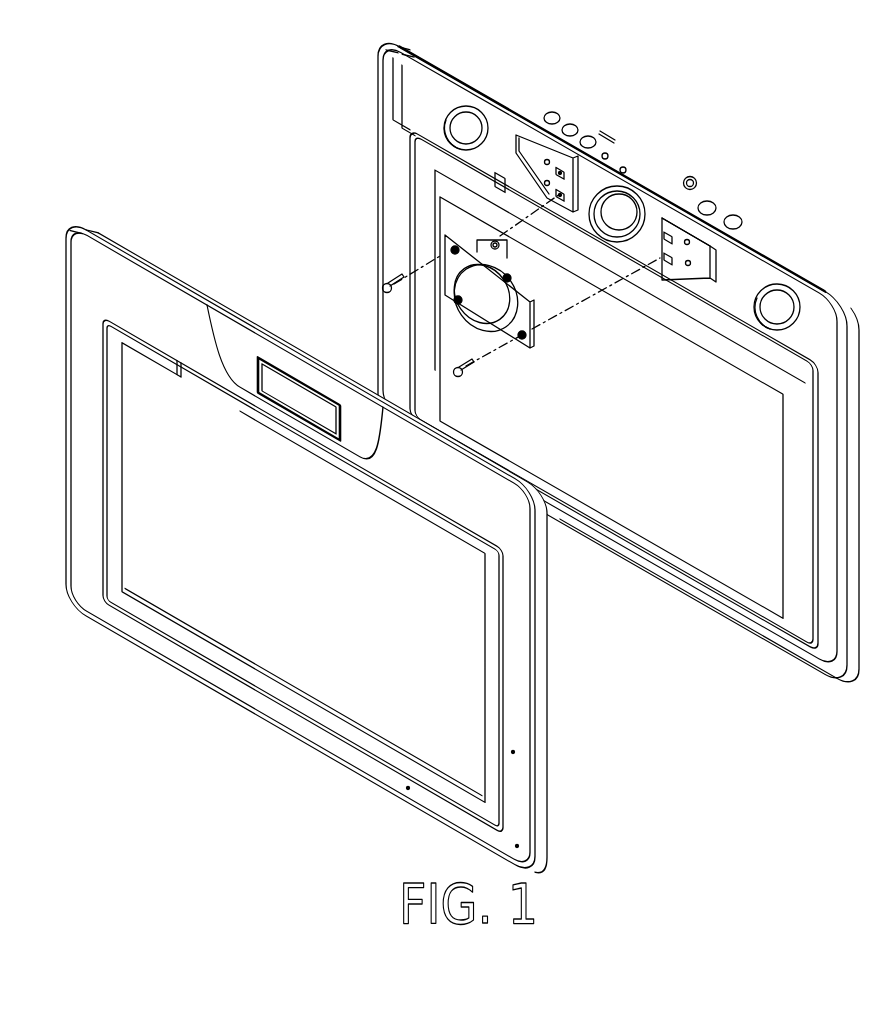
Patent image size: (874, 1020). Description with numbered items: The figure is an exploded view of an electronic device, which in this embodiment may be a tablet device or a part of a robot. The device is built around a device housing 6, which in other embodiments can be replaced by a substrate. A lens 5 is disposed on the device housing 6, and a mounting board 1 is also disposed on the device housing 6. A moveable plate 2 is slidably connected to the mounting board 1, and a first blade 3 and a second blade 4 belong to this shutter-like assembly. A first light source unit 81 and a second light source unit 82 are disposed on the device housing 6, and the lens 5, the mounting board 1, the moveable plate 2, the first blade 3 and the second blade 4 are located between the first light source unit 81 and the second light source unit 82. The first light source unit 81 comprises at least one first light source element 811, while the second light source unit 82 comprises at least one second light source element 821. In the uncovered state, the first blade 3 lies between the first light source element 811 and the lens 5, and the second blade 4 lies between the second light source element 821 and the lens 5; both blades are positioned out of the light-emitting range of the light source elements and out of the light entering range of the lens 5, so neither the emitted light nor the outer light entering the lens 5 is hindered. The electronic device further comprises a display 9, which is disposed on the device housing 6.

The mounting board 1 is at (517, 314).
The moveable plate 2 is at (533, 310).
The first blade 3 is at (512, 341).
The second blade 4 is at (440, 242).
The lens 5 is at (615, 207).
The device housing 6 is at (500, 145).
The display 9 is at (640, 493).
The first light source unit 81 is at (681, 233).
The first light source element 811 is at (653, 247).
The second light source unit 82 is at (522, 132).
The second light source element 821 is at (552, 163).